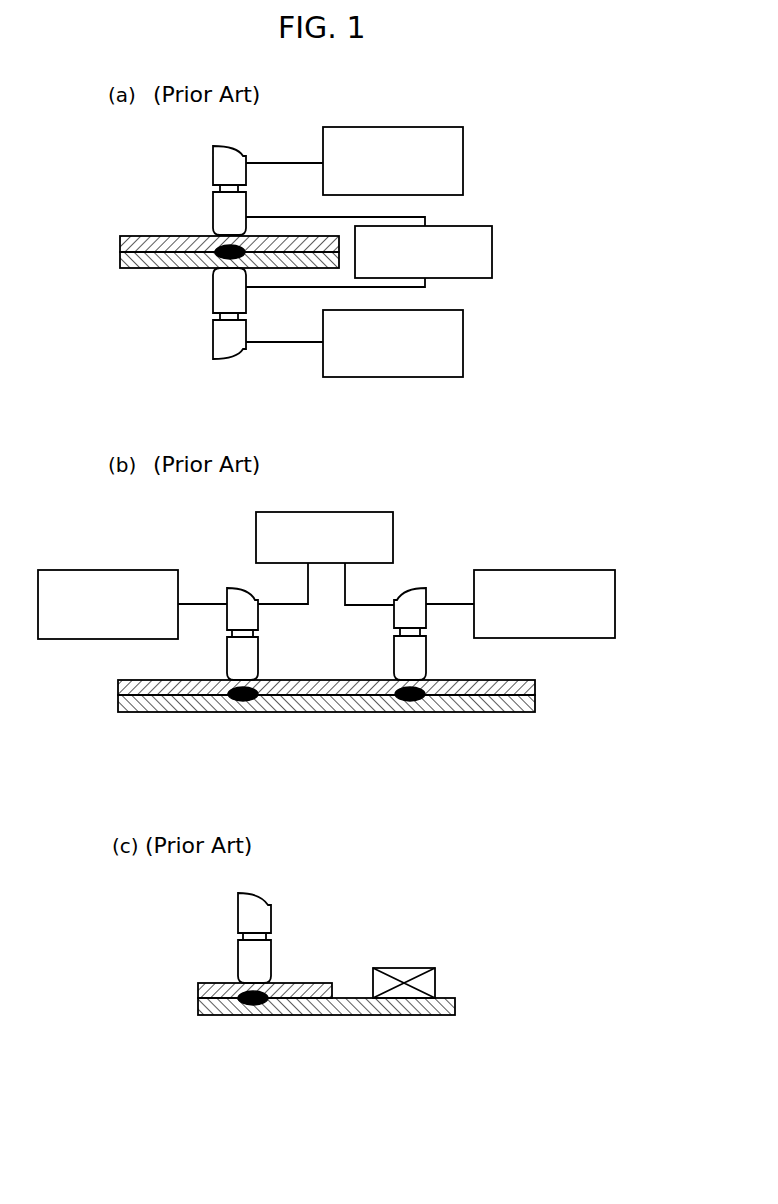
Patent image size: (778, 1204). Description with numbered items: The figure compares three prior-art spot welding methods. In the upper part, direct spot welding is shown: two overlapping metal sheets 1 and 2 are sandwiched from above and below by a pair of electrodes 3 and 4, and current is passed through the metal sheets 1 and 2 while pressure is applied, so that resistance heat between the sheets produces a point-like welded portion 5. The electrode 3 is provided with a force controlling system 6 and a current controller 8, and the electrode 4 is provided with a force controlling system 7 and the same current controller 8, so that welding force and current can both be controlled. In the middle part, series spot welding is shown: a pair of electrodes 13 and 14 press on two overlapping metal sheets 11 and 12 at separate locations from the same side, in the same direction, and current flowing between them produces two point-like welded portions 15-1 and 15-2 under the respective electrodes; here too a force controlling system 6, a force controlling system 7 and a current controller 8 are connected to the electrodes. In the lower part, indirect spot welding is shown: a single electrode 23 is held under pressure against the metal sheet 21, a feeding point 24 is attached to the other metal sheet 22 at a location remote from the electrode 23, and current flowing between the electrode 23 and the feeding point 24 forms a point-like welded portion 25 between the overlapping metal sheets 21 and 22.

The metal sheet 1 is at (133, 236).
The metal sheet 2 is at (133, 268).
The electrode 3 is at (213, 205).
The electrode 4 is at (213, 305).
The welded portion 5 is at (215, 265).
The force controlling system 6 is at (465, 163).
The force controlling system 7 is at (465, 342).
The current controller 8 is at (493, 253).
The metal sheet 11 is at (130, 680).
The metal sheet 12 is at (135, 713).
The electrode 13 is at (260, 660).
The electrode 14 is at (393, 662).
The welded portion 15-1 is at (230, 707).
The welded portion 15-2 is at (423, 707).
The metal sheet 21 is at (215, 983).
The metal sheet 22 is at (212, 1015).
The electrode 23 is at (273, 960).
The feeding point 24 is at (403, 968).
The welded portion 25 is at (250, 1015).